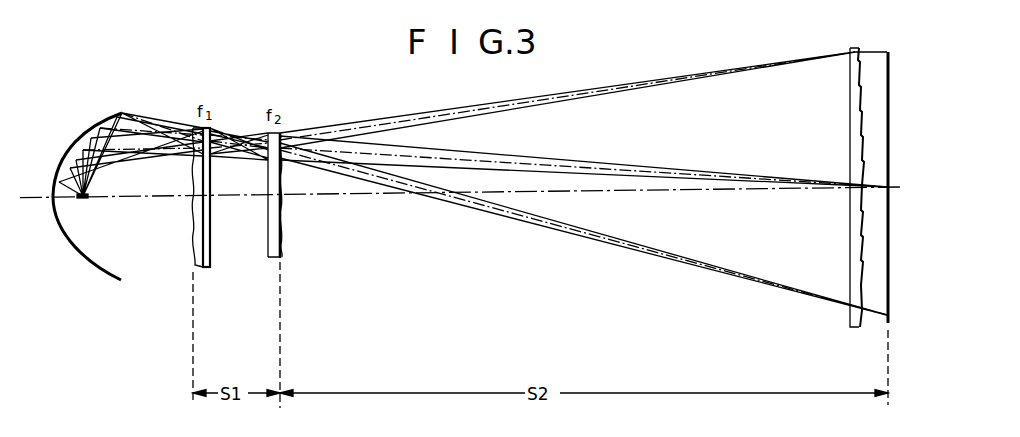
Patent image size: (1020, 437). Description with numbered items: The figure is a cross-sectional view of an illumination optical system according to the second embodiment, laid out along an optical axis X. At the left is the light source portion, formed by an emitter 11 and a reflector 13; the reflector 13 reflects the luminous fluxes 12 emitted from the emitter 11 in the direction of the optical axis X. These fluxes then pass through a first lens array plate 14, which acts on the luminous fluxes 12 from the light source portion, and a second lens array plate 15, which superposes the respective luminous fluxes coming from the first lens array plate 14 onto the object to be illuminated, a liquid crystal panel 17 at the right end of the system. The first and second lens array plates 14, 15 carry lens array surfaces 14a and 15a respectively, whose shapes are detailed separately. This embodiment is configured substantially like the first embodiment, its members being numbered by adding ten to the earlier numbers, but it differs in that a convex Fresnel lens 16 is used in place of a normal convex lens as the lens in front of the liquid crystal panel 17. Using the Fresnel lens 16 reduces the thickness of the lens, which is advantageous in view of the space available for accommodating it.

The emitter 11 is at (84, 199).
The luminous fluxes 12 is at (93, 177).
The reflector 13 is at (98, 126).
The first lens array plate 14 is at (186, 218).
The lens array surface 14a is at (193, 251).
The second lens array plate 15 is at (296, 220).
The lens array surface 15a is at (284, 244).
The convex Fresnel lens 16 is at (850, 320).
The liquid crystal panel 17 is at (887, 324).
The optical axis X is at (122, 197).